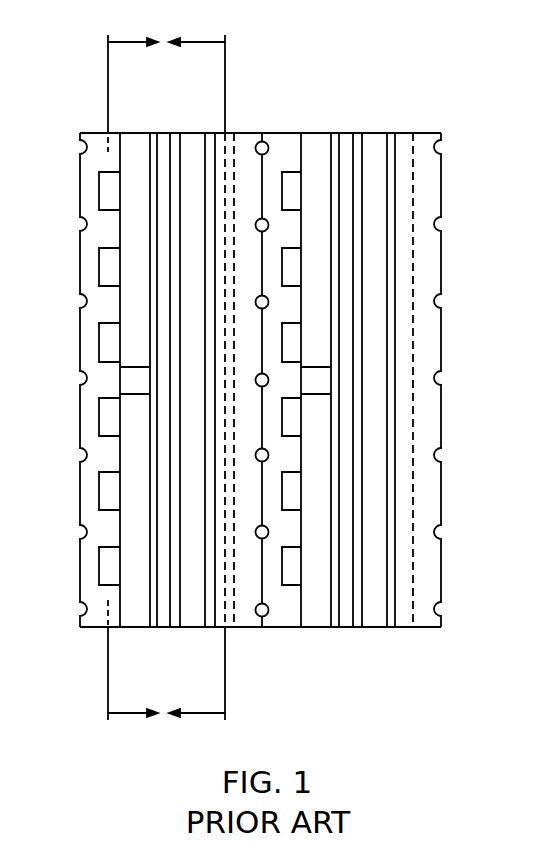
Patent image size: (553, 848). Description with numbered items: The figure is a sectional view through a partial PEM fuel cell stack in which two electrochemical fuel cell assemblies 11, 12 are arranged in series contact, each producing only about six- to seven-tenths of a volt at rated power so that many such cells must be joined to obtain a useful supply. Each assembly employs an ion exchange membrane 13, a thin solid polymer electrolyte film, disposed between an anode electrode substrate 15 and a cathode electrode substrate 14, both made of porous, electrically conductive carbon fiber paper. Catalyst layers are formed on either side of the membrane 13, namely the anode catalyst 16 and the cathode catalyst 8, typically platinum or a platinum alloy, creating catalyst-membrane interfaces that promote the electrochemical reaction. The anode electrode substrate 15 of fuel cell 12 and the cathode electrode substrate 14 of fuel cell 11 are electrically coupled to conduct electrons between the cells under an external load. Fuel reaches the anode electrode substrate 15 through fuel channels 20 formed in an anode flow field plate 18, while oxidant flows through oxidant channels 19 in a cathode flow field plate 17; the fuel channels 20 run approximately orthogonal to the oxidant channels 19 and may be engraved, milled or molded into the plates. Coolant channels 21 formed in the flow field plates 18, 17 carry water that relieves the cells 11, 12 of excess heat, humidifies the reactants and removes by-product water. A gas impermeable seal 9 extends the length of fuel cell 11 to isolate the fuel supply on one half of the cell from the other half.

The cathode catalyst 8 is at (173, 132).
The gas impermeable seal 9 is at (136, 383).
The electrochemical fuel cell assembly 11 is at (160, 639).
The electrochemical fuel cell assembly 12 is at (357, 658).
The ion exchange membrane 13 is at (165, 132).
The cathode electrode substrate 14 is at (192, 132).
The anode electrode substrate 15 is at (135, 147).
The anode catalyst 16 is at (152, 132).
The cathode flow field plate 17 is at (242, 147).
The anode flow field plate 18 is at (97, 132).
The oxidant channels 19 is at (223, 279).
The fuel channels 20 is at (115, 192).
The coolant channels 21 is at (445, 222).